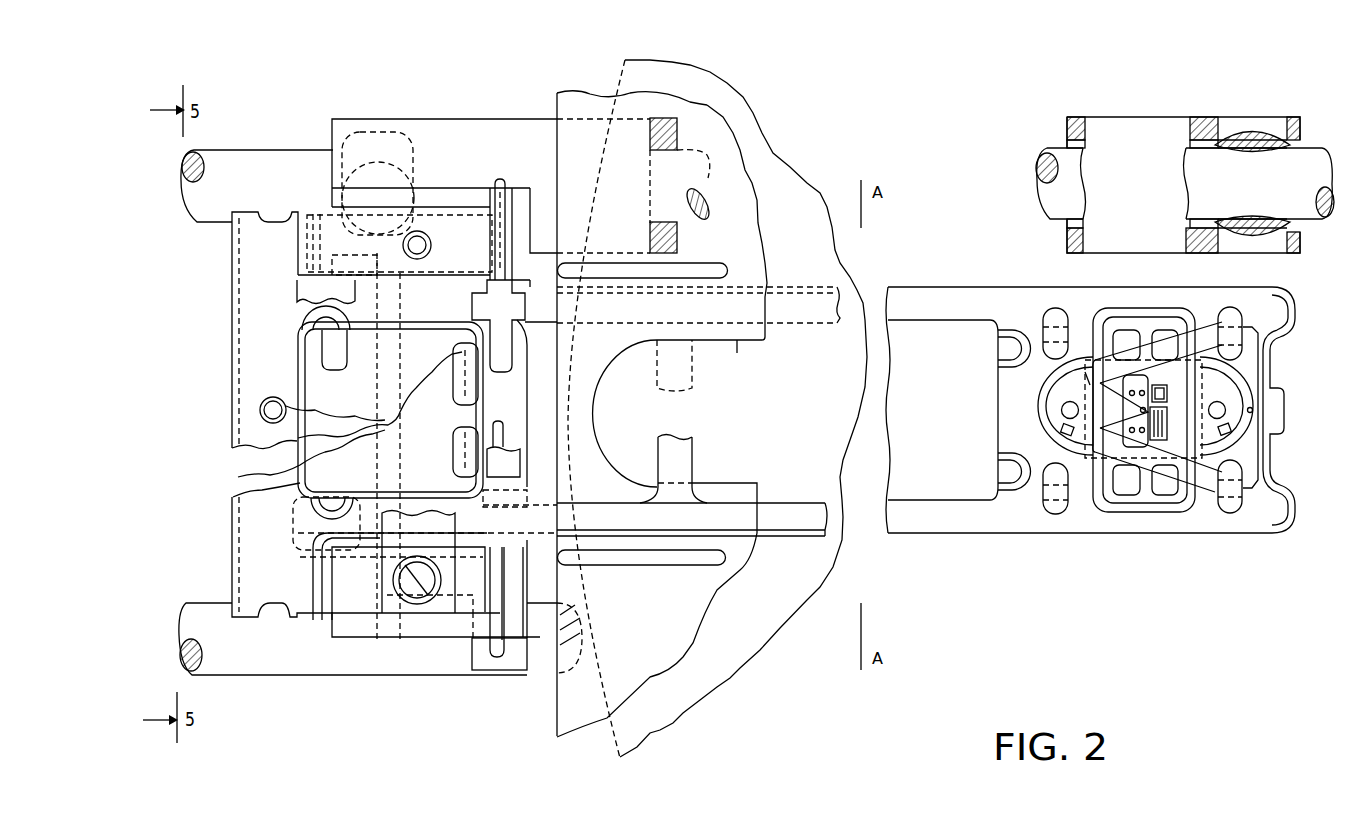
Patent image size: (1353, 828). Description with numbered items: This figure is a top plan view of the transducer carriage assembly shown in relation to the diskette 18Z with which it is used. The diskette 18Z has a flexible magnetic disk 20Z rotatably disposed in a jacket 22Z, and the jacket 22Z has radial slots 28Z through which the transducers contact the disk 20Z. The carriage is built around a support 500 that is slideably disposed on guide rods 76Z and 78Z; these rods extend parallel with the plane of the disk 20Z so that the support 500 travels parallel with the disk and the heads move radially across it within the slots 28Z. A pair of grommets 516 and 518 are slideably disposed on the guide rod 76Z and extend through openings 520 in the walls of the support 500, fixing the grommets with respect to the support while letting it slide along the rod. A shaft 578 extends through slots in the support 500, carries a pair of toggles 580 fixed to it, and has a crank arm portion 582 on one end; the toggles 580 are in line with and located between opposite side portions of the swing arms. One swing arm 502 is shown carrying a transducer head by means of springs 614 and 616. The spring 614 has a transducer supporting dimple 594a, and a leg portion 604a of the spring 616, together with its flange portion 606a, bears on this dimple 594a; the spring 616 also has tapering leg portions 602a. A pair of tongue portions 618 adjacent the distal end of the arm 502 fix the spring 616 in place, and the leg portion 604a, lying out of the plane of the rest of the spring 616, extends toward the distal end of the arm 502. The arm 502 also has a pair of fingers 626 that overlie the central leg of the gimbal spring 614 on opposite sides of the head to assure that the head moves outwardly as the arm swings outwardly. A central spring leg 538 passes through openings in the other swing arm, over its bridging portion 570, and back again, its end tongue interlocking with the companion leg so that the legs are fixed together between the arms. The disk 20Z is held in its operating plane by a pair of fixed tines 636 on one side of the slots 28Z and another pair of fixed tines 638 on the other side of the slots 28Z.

The guide rod 76Z is at (265, 150).
The guide rod 78Z is at (285, 676).
The grommet 516 is at (377, 130).
The shaft 578 is at (498, 180).
The jacket 22Z is at (573, 93).
The flexible magnetic disk 20Z is at (743, 96).
The fixed tines 636 is at (714, 262).
The fixed tines 638 is at (663, 568).
The toggles 580 is at (476, 307).
The spring leg 538 is at (439, 356).
The bridging portion 570 is at (333, 358).
The radial slots 28Z is at (737, 350).
The crank arm portion 582 is at (488, 648).
The support 500 is at (530, 653).
The magnetic disk assembly 18Z is at (726, 685).
The swing arm 502 is at (940, 287).
The openings 520 is at (1237, 117).
The grommet 518 is at (1267, 128).
The leg portion 604a is at (1085, 372).
The fingers 626 is at (1125, 360).
The transducer supporting dimple 594a is at (1145, 411).
The tongue portions 618 is at (1238, 318).
The spring 614 is at (1224, 402).
The spring 616 is at (1250, 462).
The flange portion 606a is at (1118, 432).
The tapering leg portions 602a is at (1210, 487).